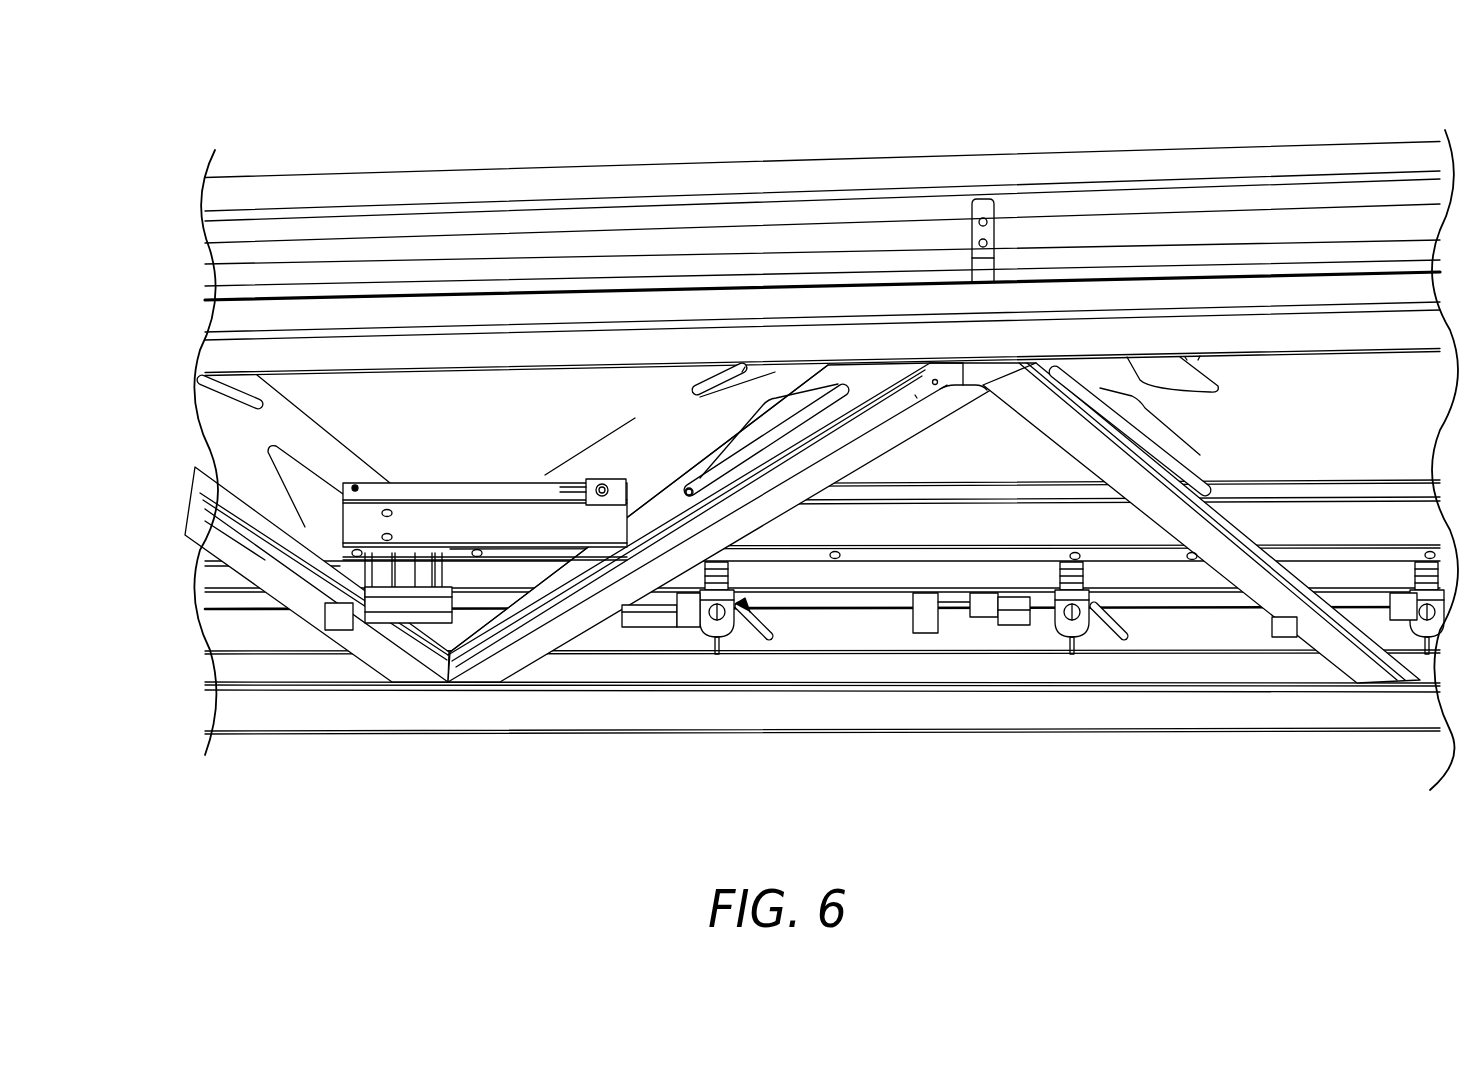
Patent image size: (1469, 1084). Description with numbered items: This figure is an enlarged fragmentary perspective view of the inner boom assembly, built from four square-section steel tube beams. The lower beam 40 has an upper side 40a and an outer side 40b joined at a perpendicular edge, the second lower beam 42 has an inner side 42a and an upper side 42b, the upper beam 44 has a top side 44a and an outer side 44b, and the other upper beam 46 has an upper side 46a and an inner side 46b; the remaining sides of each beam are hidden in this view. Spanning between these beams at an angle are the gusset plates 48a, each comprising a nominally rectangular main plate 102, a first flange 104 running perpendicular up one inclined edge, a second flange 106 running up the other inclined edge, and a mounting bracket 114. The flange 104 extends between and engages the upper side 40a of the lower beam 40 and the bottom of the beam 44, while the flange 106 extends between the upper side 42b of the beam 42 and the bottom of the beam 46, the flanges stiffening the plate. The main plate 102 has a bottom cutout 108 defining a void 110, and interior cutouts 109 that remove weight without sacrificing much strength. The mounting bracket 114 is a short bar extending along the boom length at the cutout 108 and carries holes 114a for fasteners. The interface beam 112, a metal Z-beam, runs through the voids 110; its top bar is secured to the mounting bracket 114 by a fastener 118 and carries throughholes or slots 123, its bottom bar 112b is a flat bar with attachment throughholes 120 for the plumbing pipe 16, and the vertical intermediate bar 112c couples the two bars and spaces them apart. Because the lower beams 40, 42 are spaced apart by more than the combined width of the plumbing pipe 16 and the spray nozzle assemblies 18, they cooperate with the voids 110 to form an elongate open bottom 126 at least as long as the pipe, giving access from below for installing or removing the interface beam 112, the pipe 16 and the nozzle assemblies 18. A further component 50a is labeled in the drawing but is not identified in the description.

The plumbing pipe 16 is at (838, 578).
The spray nozzle assemblies 18 is at (705, 640).
The lower beam 40 is at (315, 713).
The upper side 40a is at (652, 677).
The outer side 40b is at (547, 720).
The beam 42 is at (240, 618).
The inner side 42a is at (205, 552).
The upper side 42b is at (212, 588).
The beam 44 is at (722, 305).
The top side 44a is at (200, 320).
The outer side 44b is at (195, 357).
The beam 46 is at (492, 183).
The upper side 46a is at (415, 185).
The inner side 46b is at (320, 222).
The gusset plates 48a is at (677, 420).
The diagonal brace member 50a is at (398, 406).
The main plate 102 is at (789, 587).
The first flange 104 is at (1012, 395).
The second flange 106 is at (745, 368).
The bottom cutout 108 is at (1290, 470).
The interior cutouts 109 is at (915, 395).
The void 110 is at (1125, 457).
The interface beam 112 is at (441, 533).
The bottom bar 112b is at (215, 495).
The intermediate bar 112c is at (225, 452).
The mounting bracket 114 is at (625, 512).
The holes 114a is at (550, 487).
The fastener 118 is at (603, 480).
The attachment throughholes 120 is at (836, 550).
The throughholes or slots 123 is at (692, 485).
The elongate open bottom 126 is at (875, 637).